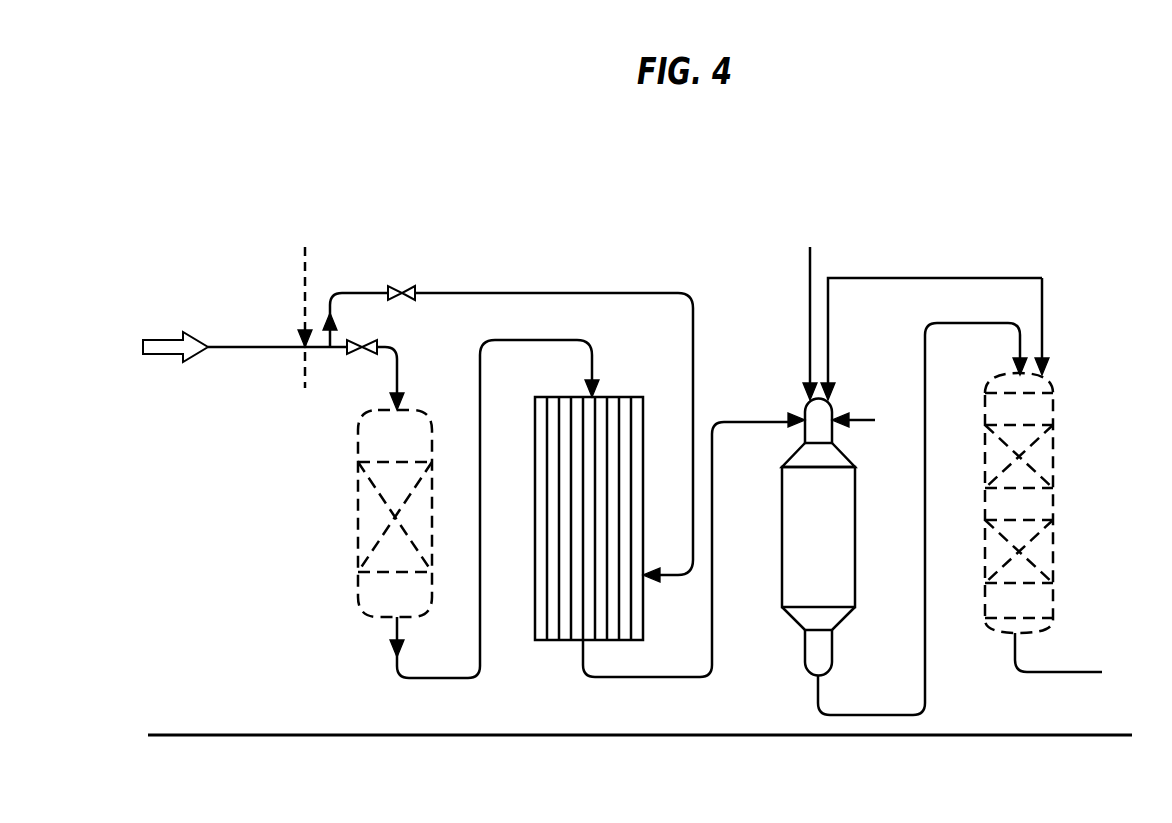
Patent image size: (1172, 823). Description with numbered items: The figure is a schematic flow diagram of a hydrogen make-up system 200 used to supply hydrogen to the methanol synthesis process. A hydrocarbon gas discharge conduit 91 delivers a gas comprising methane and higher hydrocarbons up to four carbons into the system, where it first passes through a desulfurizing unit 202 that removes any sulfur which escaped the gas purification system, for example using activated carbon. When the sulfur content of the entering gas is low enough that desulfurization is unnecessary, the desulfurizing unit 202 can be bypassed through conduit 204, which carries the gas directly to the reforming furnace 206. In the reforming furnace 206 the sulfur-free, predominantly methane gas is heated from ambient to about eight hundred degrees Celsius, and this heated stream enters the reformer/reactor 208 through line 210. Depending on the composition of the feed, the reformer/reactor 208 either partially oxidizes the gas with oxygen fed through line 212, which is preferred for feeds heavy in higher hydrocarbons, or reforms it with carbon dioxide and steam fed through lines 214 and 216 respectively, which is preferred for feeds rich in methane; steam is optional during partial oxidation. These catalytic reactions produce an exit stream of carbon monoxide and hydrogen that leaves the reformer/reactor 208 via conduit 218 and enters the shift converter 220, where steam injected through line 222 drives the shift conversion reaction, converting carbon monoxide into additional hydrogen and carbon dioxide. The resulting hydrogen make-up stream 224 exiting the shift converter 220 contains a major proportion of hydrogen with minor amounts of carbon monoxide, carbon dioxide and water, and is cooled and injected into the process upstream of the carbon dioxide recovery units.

The hydrocarbon gas discharge conduit 91 is at (272, 347).
The hydrogen make-up system 200 is at (662, 250).
The desulfurizing unit 202 is at (350, 504).
The bypass conduit 204 is at (474, 293).
The reforming furnace 206 is at (563, 640).
The reformer/reactor 208 is at (793, 618).
The feed line 210 is at (713, 527).
The oxygen line 212 is at (862, 418).
The carbon dioxide line 214 is at (808, 322).
The steam line 216 is at (829, 300).
The exit conduit 218 is at (925, 590).
The shift converter 220 is at (985, 610).
The steam injection line 222 is at (1042, 333).
The hydrogen make-up stream 224 is at (1048, 672).